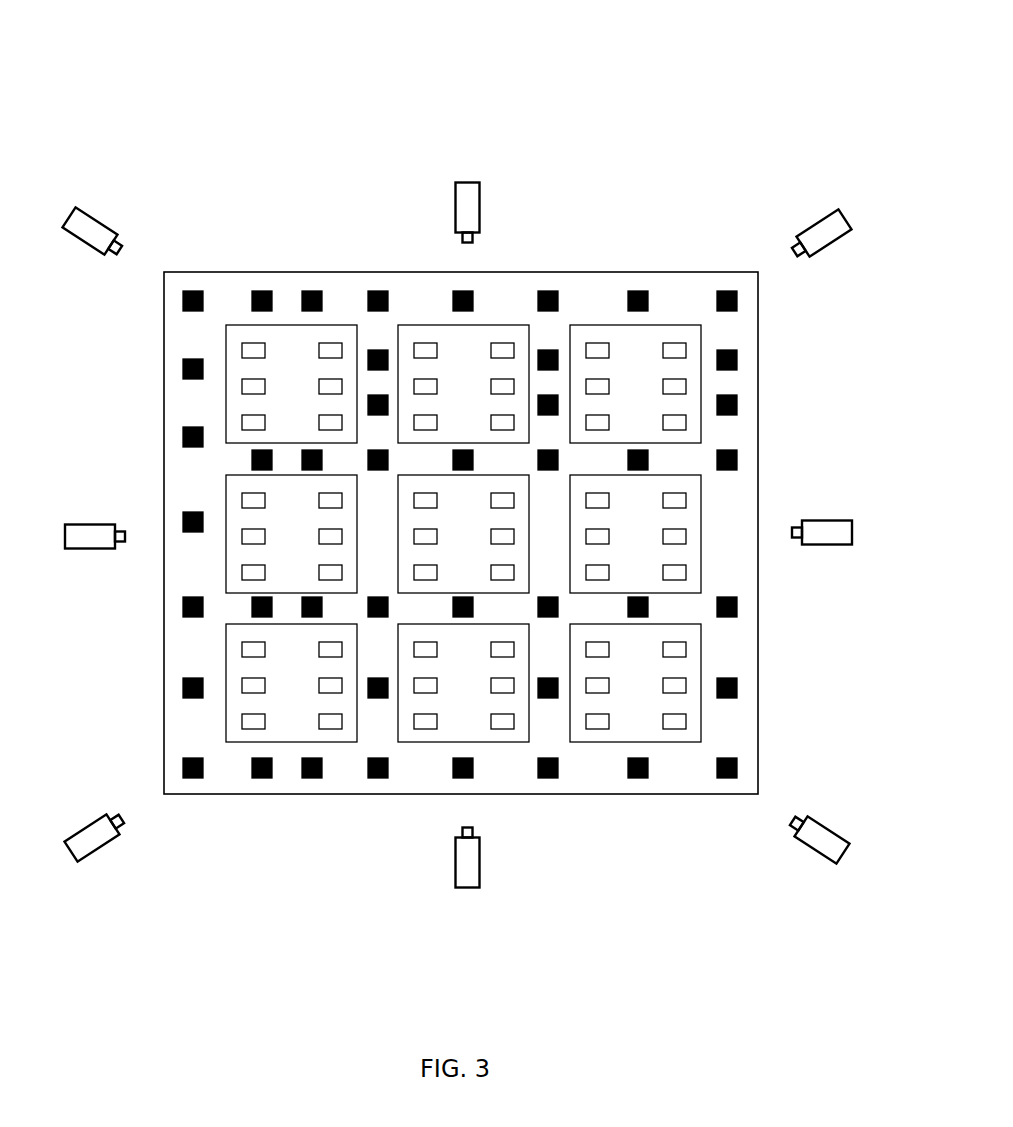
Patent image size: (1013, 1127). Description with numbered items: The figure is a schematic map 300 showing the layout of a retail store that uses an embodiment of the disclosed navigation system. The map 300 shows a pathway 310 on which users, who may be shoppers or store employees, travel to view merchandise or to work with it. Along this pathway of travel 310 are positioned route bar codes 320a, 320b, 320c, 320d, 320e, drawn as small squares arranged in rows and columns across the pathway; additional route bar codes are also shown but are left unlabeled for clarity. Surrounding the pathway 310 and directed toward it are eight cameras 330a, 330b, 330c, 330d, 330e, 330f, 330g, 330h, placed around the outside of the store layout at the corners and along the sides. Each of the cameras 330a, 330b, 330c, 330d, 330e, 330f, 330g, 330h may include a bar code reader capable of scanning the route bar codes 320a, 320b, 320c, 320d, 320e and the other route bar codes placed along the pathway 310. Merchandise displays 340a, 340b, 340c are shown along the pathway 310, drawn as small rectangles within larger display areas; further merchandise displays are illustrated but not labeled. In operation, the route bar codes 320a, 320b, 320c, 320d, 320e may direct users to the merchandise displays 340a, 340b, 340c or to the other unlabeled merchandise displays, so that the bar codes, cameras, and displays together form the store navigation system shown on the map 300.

The map 300 is at (158, 63).
The pathway 310 is at (745, 490).
The route bar code 320a is at (183, 369).
The route bar code 320b is at (193, 292).
The route bar code 320c is at (262, 292).
The route bar code 320d is at (313, 292).
The route bar code 320e is at (378, 292).
The camera 330a is at (87, 216).
The camera 330b is at (473, 197).
The camera 330c is at (837, 221).
The camera 330d is at (843, 545).
The camera 330e is at (826, 858).
The camera 330f is at (477, 887).
The camera 330g is at (82, 860).
The camera 330h is at (70, 549).
The merchandise display 340a is at (250, 350).
The merchandise display 340b is at (245, 390).
The merchandise display 340c is at (248, 428).